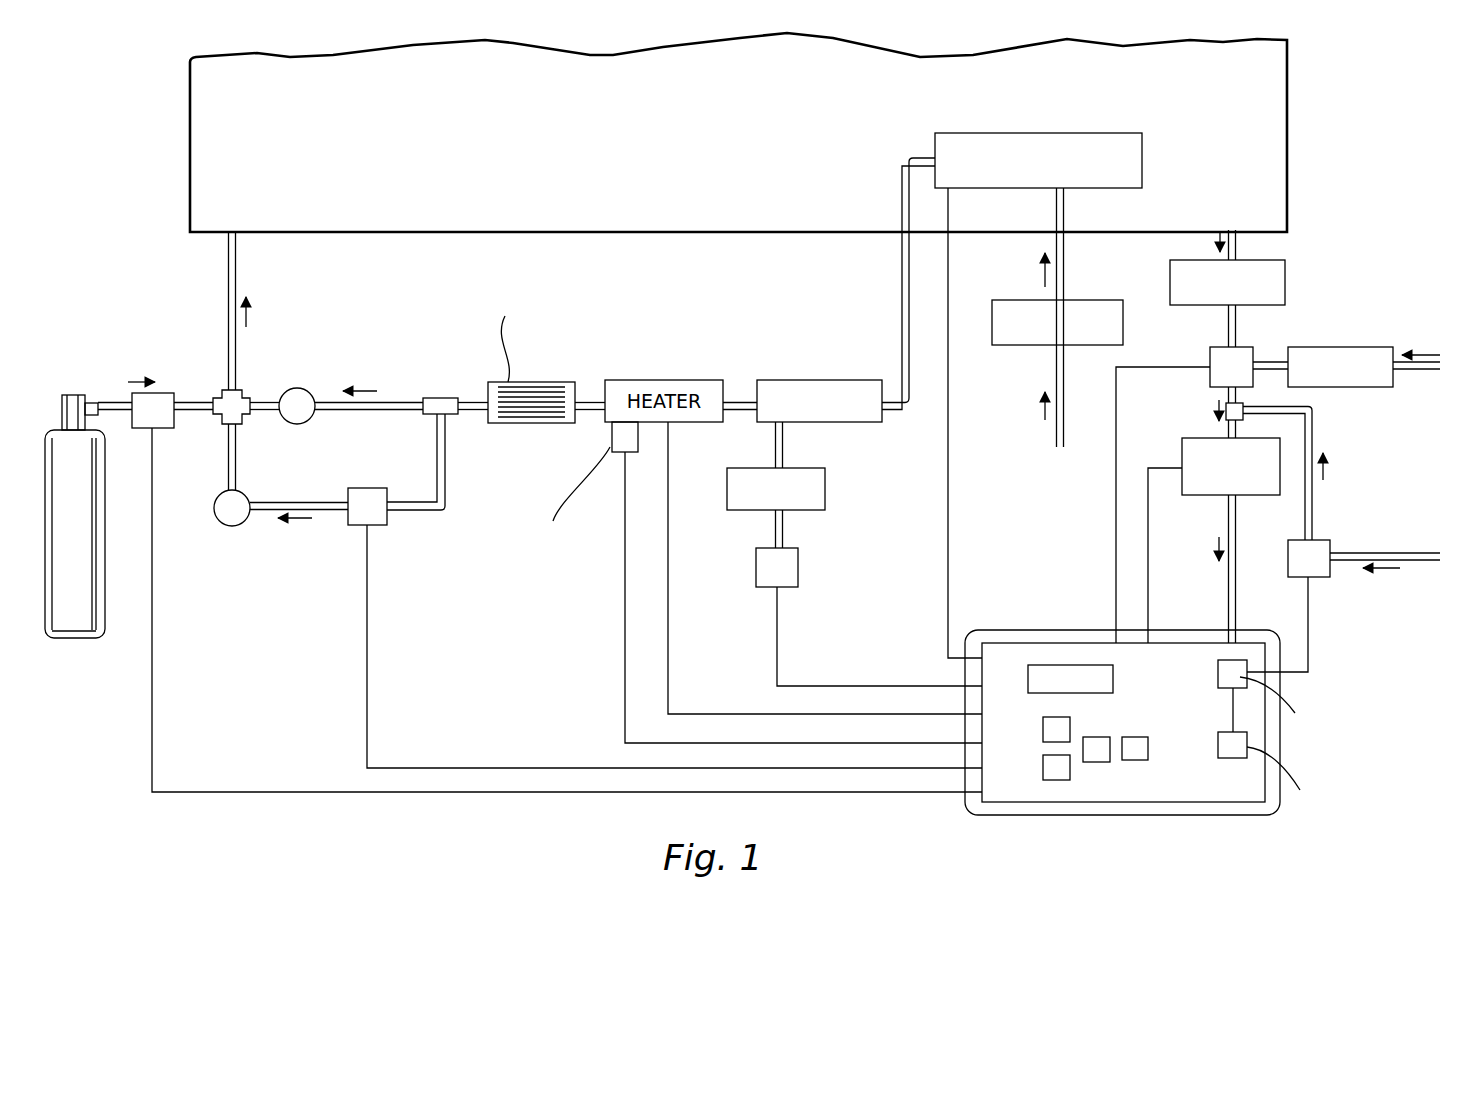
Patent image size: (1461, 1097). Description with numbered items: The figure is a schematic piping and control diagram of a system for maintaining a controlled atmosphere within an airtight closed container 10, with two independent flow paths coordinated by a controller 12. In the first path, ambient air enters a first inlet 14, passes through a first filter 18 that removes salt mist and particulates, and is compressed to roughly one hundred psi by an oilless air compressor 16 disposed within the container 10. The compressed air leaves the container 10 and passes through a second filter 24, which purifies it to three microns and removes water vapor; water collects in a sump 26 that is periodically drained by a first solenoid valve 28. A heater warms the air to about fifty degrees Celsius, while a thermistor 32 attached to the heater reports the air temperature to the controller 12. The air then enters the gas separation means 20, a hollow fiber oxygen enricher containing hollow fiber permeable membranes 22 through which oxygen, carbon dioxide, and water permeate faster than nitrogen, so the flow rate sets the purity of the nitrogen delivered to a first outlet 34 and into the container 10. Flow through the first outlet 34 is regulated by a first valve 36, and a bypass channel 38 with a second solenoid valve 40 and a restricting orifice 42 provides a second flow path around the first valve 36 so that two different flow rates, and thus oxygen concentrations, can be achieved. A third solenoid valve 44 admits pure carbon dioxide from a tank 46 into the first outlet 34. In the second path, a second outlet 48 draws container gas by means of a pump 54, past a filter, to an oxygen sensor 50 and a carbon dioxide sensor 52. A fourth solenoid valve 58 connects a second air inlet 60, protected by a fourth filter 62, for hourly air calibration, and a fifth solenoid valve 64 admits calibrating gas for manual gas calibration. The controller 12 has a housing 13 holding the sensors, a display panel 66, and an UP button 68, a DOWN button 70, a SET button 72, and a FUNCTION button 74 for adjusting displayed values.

The container 10 is at (492, 163).
The controller 12 is at (1140, 817).
The housing 13 is at (1262, 817).
The first inlet 14 is at (1065, 256).
The air compressor 16 is at (1087, 135).
The first filter 18 is at (1022, 340).
The gas separation means 20 is at (503, 423).
The hollow fiber permeable membranes 22 is at (535, 413).
The second filter 24 is at (853, 417).
The sump 26 is at (817, 497).
The first solenoid valve 28 is at (787, 568).
The thermistor 32 is at (638, 437).
The first outlet 34 is at (228, 280).
The first valve 36 is at (297, 388).
The bypass channel 38 is at (237, 460).
The second solenoid valve 40 is at (375, 520).
The restricting orifice 42 is at (227, 524).
The third solenoid valve 44 is at (162, 418).
The tank 46 is at (80, 627).
The second outlet 48 is at (1237, 242).
The oxygen sensor 50 is at (1218, 670).
The carbon dioxide sensor 52 is at (1247, 737).
The pump 54 is at (1200, 440).
The fourth solenoid valve 58 is at (1242, 358).
The second air inlet 60 is at (1415, 370).
The fourth filter 62 is at (1327, 387).
The fifth solenoid valve 64 is at (1320, 542).
The display panel 66 is at (1113, 677).
The UP button 68 is at (1067, 727).
The DOWN button 70 is at (1057, 777).
The SET button 72 is at (1097, 757).
The FUNCTION button 74 is at (1143, 745).